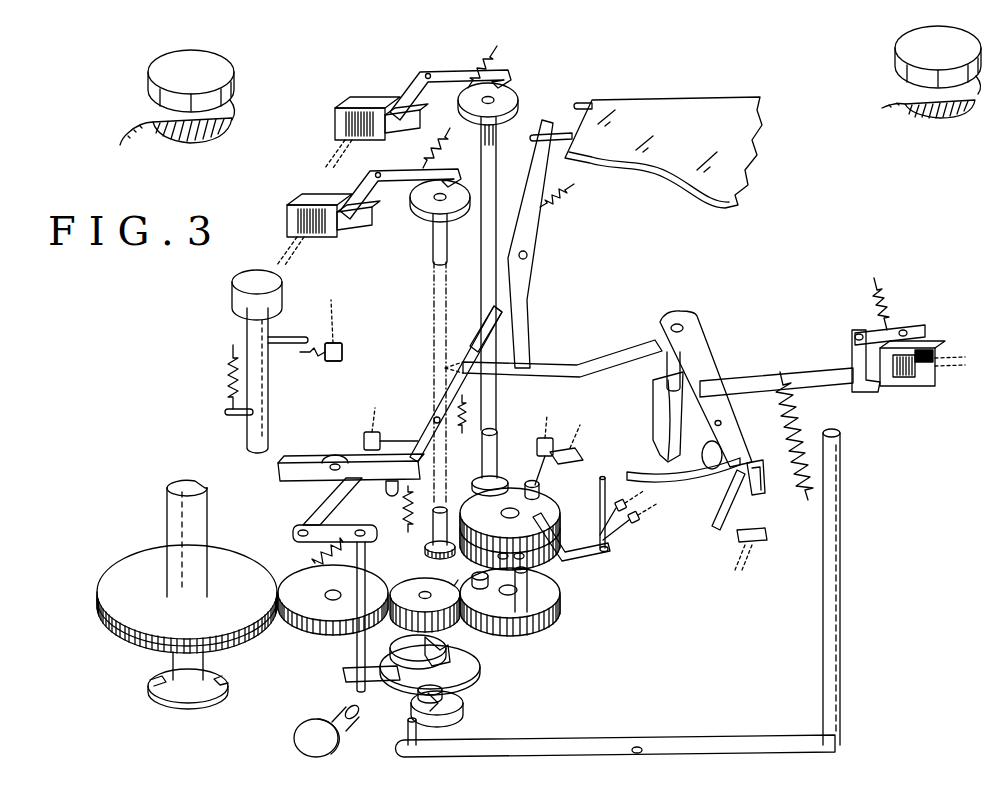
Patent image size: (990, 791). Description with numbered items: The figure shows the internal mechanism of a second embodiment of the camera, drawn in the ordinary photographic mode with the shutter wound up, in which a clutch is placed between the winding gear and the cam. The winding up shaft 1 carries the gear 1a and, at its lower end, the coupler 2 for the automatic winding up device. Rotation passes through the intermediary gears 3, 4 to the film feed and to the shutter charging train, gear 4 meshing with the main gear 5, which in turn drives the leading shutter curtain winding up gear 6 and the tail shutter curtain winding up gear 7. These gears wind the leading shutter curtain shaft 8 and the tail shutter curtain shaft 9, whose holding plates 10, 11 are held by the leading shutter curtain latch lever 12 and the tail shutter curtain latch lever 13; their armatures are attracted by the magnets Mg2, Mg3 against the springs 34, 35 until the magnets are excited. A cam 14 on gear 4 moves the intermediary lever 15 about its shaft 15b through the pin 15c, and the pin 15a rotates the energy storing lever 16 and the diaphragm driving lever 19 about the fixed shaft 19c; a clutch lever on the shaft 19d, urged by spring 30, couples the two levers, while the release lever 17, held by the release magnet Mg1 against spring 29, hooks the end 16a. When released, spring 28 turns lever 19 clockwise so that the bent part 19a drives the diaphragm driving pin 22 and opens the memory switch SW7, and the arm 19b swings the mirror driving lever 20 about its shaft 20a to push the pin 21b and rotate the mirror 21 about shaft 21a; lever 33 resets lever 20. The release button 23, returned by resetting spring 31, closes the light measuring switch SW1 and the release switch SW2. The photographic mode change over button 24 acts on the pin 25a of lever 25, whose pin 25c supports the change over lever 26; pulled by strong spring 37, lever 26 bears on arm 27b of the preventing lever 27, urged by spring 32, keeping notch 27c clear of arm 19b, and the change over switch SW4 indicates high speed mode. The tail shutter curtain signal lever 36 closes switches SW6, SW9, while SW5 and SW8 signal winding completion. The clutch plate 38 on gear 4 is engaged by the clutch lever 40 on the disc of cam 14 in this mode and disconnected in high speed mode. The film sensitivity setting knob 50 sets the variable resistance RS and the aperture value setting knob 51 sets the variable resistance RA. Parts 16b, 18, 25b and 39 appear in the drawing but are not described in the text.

The winding up shaft 1 is at (172, 520).
The gear 1a is at (140, 632).
The coupler 2 is at (222, 668).
The intermediary gear 3 is at (305, 613).
The intermediary gear 4 is at (458, 620).
The main gear 5 is at (508, 615).
The leading shutter curtain winding up gear 6 is at (548, 560).
The tail shutter curtain winding up gear 7 is at (548, 518).
The leading shutter curtain shaft 8 is at (436, 526).
The tail shutter curtain shaft 9 is at (497, 445).
The leading shutter curtain holding plate 10 is at (455, 205).
The tail shutter curtain holding plate 11 is at (512, 97).
The leading shutter curtain latch lever 12 is at (455, 175).
The tail shutter curtain latch lever 13 is at (508, 72).
The cam 14 is at (458, 710).
The intermediary lever 15 is at (562, 742).
The pin 15a is at (841, 603).
The shaft 15b is at (638, 747).
The pin 15c is at (408, 732).
The energy storing lever 16 is at (739, 382).
The end of energy storing lever 16a is at (852, 365).
The arm projection 16b is at (660, 440).
The release lever 17 is at (868, 382).
The plate 18 is at (668, 482).
The diaphragm driving lever 19 is at (644, 337).
The bent part 19a is at (752, 465).
The arm 19b is at (560, 365).
The fixed shaft 19c is at (680, 323).
The shaft 19d is at (722, 423).
The mirror driving lever 20 is at (530, 235).
The shaft 20a is at (527, 258).
The mirror 21 is at (648, 112).
The shaft 21a is at (583, 103).
The pin 21b is at (533, 140).
The diaphragm driving pin 22 is at (718, 525).
The release button 23 is at (268, 413).
The photographic mode change over button 24 is at (300, 738).
The lever 25 is at (320, 510).
The pin 25a is at (345, 675).
The hole 25b is at (296, 533).
The pin 25c is at (337, 458).
The change over lever 26 is at (320, 462).
The lever for preventing the resetting 27 is at (440, 405).
The lever arm 27b is at (385, 492).
The notch 27c is at (498, 332).
The spring 28 is at (797, 430).
The spring 29 is at (885, 305).
The spring 30 is at (713, 470).
The resetting spring 31 is at (228, 375).
The spring 32 is at (468, 412).
The lever 33 is at (560, 195).
The spring 34 is at (432, 150).
The spring 35 is at (494, 52).
The tail shutter curtain signal lever 36 is at (608, 547).
The spring 37 is at (405, 522).
The clutch plate 38 is at (455, 660).
The plate 39 is at (470, 683).
The clutch lever 40 is at (395, 690).
The film sensitivity setting knob 50 is at (906, 50).
The aperture value setting knob 51 is at (225, 78).
The variable resistance RA is at (192, 140).
The variable resistance RS is at (938, 118).
The release magnet Mg1 is at (922, 388).
The magnet Mg2 is at (303, 200).
The magnet Mg3 is at (385, 100).
The light measuring switch SW1 is at (333, 362).
The release switch SW2 is at (330, 368).
The photographic mode change over switch SW4 is at (380, 438).
The winding up completion switch SW5 is at (568, 465).
The tail shutter curtain signal switch SW6 is at (642, 518).
The memory switch SW7 is at (752, 543).
The winding up completion switch SW8 is at (546, 437).
The tail shutter curtain signal switch SW9 is at (622, 502).